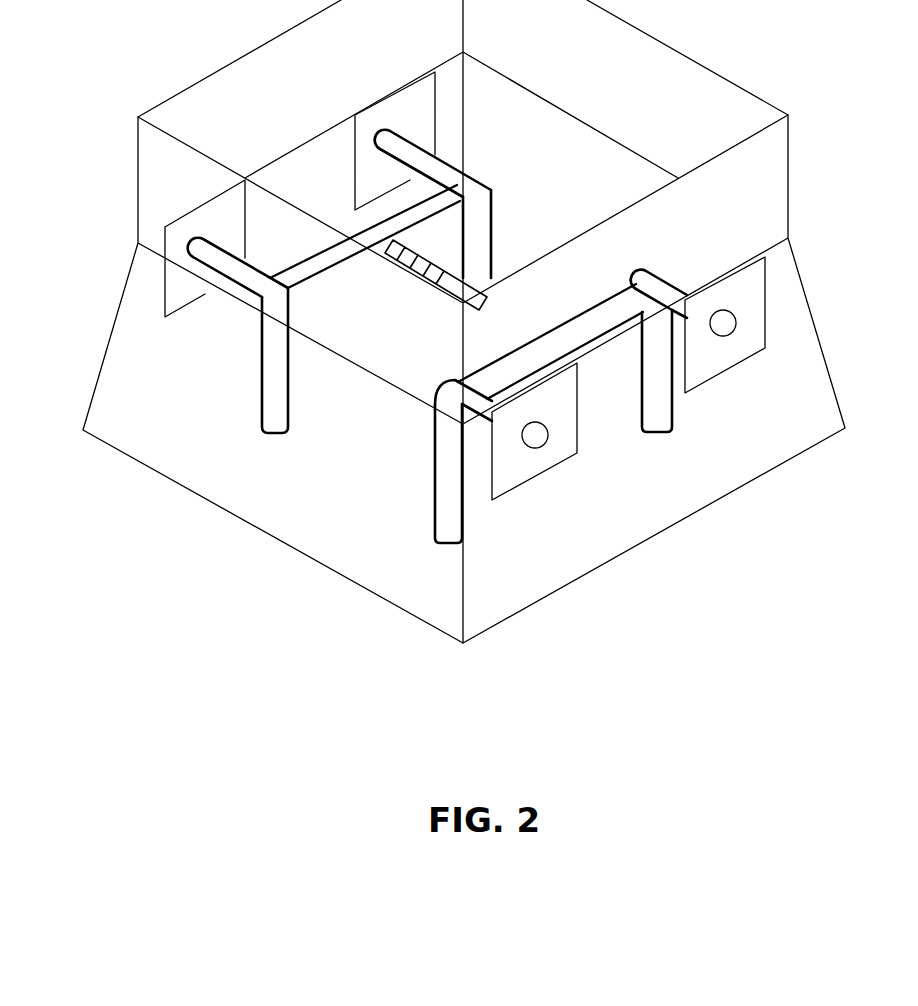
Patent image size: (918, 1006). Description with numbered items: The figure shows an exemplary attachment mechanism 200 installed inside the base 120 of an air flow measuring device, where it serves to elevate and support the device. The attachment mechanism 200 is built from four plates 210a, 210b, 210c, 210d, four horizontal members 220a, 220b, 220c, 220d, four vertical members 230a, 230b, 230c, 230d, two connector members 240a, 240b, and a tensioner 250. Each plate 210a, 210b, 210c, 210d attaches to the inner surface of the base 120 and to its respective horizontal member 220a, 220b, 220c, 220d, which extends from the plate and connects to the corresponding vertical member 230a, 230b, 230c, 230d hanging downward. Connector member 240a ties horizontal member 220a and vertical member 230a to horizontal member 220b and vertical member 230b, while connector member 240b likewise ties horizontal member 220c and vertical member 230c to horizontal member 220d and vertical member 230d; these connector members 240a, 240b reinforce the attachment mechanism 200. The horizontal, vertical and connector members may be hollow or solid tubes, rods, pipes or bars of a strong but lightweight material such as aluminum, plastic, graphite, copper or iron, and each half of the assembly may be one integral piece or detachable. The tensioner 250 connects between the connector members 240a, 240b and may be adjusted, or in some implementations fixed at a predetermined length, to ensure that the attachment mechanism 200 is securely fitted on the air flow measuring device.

The base 120 is at (110, 322).
The attachment mechanism 200 is at (520, 167).
The plate 210a is at (210, 215).
The plate 210b is at (413, 110).
The plate 210c is at (556, 452).
The plate 210d is at (748, 335).
The horizontal member 220a is at (235, 256).
The horizontal member 220b is at (422, 150).
The horizontal member 220c is at (478, 407).
The horizontal member 220d is at (668, 296).
The vertical member 230a is at (270, 402).
The vertical member 230b is at (472, 204).
The vertical member 230c is at (443, 492).
The vertical member 230d is at (657, 421).
The connector member 240a is at (297, 277).
The connector member 240b is at (580, 317).
The tensioner 250 is at (433, 305).